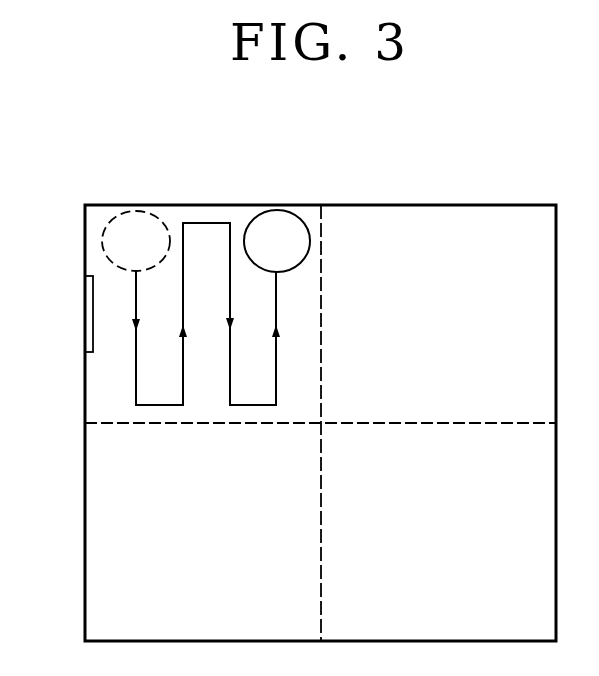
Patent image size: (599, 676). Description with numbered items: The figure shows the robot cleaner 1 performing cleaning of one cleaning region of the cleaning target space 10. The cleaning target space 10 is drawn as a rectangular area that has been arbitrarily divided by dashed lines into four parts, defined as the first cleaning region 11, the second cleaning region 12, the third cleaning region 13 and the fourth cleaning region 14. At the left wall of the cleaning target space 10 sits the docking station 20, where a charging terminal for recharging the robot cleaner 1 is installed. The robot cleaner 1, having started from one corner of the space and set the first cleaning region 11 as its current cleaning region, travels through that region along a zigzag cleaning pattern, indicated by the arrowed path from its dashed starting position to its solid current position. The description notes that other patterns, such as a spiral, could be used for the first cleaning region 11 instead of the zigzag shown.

The robot cleaner 1 is at (275, 220).
The cleaning target space 10 is at (445, 203).
The first cleaning region 11 is at (192, 319).
The second cleaning region 12 is at (456, 318).
The third cleaning region 13 is at (434, 547).
The fourth cleaning region 14 is at (191, 549).
The docking station 20 is at (86, 313).